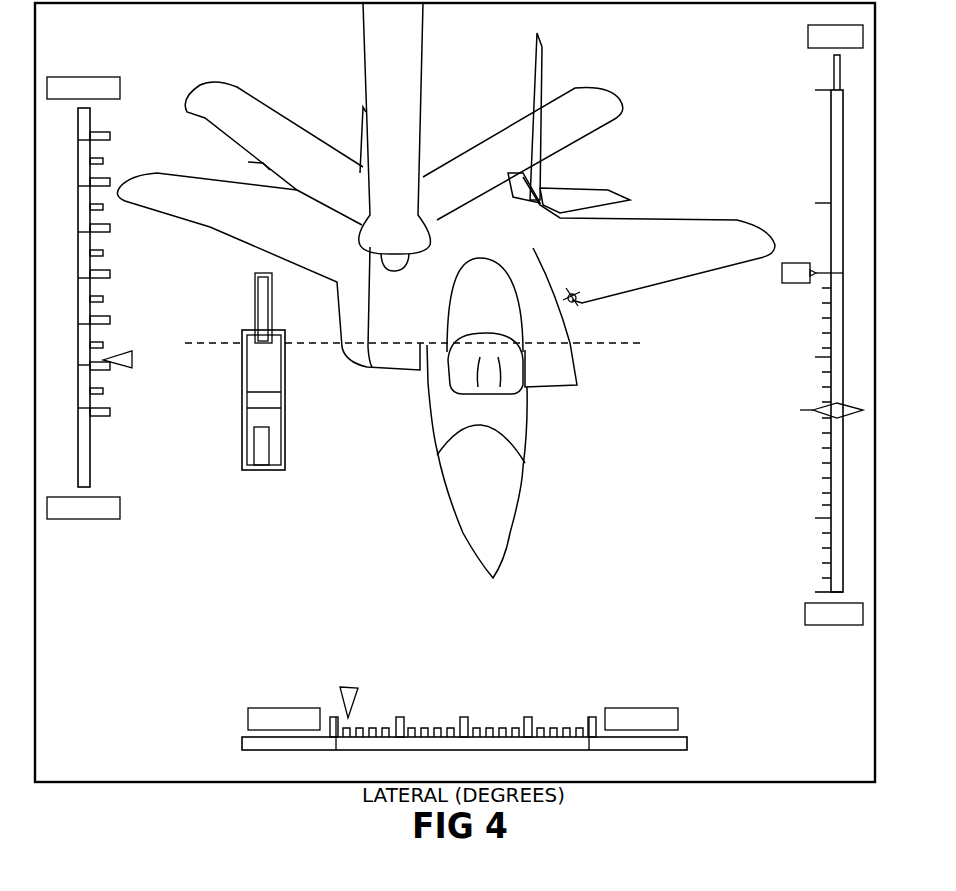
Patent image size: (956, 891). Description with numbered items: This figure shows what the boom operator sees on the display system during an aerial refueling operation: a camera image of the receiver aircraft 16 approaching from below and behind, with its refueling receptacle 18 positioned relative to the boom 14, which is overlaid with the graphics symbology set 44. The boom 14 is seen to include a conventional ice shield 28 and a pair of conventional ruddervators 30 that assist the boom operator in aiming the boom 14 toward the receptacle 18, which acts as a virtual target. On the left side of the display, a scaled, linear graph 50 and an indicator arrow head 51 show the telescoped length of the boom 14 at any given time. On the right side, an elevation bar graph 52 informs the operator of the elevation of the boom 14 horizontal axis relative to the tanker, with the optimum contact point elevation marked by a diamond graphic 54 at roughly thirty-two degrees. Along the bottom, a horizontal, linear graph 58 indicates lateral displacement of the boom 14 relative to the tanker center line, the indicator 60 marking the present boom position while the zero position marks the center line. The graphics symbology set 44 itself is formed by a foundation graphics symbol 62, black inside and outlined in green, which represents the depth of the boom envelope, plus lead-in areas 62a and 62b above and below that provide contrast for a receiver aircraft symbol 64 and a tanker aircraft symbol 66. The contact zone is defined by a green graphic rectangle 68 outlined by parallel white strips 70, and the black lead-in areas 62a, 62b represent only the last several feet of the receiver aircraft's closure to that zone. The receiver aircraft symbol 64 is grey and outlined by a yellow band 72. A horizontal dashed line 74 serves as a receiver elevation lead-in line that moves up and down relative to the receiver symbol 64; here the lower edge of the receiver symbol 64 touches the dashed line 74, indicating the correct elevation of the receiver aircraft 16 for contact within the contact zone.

The boom 14 is at (393, 137).
The receiver aircraft 16 is at (446, 305).
The refueling receptacle 18 is at (582, 302).
The ice shield 28 is at (410, 219).
The ruddervators 30 is at (223, 118).
The graphics symbology set 44 is at (281, 412).
The scaled linear graph 50 is at (128, 300).
The indicator arrow head 51 is at (121, 371).
The elevation bar graph 52 is at (778, 200).
The diamond graphic 54 is at (786, 410).
The horizontal linear graph 58 is at (500, 696).
The indicator 60 is at (345, 688).
The foundation graphics symbol 62 is at (314, 404).
The lead-in area 62a is at (270, 362).
The lead-in area 62b is at (277, 447).
The receiver aircraft symbol 64 is at (232, 308).
The tanker aircraft symbol 66 is at (262, 462).
The graphic rectangle 68 is at (270, 405).
The parallel white strips 70 is at (247, 400).
The yellow band 72 is at (230, 309).
The horizontal dashed line 74 is at (213, 343).